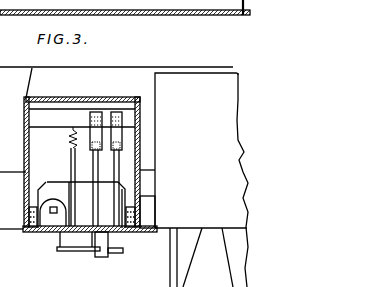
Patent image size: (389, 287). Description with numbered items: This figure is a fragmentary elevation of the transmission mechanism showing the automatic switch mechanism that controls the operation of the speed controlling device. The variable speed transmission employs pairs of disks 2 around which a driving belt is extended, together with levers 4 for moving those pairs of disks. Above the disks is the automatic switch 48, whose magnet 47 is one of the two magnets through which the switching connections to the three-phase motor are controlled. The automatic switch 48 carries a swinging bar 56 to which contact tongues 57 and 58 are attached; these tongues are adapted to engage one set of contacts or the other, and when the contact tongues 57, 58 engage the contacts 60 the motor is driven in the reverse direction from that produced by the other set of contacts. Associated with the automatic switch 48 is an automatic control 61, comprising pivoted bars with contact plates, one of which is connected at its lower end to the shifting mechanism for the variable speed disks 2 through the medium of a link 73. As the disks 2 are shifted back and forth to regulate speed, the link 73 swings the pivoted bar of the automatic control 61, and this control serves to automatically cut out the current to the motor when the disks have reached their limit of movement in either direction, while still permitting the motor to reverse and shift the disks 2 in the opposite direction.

The pairs of disks 2 is at (170, 266).
The lever 4 is at (90, 250).
The magnet 47 is at (53, 207).
The automatic switch 48 is at (87, 100).
The swinging bar 56 is at (53, 183).
The contact tongue 57 is at (116, 174).
The contact tongue 58 is at (97, 176).
The contact 60 is at (97, 144).
The automatic control 61 is at (201, 180).
The link 73 is at (155, 190).